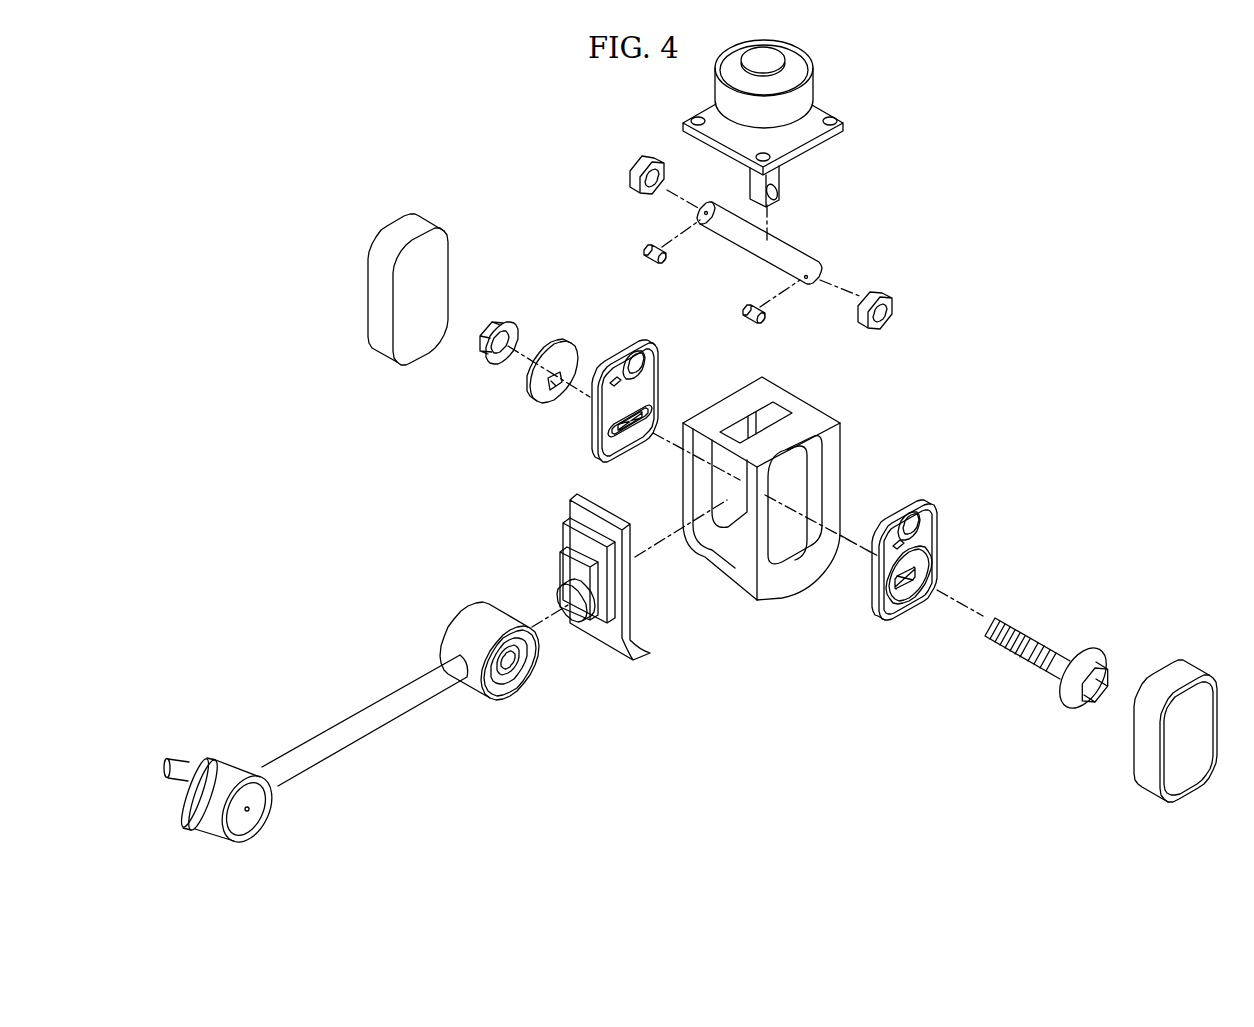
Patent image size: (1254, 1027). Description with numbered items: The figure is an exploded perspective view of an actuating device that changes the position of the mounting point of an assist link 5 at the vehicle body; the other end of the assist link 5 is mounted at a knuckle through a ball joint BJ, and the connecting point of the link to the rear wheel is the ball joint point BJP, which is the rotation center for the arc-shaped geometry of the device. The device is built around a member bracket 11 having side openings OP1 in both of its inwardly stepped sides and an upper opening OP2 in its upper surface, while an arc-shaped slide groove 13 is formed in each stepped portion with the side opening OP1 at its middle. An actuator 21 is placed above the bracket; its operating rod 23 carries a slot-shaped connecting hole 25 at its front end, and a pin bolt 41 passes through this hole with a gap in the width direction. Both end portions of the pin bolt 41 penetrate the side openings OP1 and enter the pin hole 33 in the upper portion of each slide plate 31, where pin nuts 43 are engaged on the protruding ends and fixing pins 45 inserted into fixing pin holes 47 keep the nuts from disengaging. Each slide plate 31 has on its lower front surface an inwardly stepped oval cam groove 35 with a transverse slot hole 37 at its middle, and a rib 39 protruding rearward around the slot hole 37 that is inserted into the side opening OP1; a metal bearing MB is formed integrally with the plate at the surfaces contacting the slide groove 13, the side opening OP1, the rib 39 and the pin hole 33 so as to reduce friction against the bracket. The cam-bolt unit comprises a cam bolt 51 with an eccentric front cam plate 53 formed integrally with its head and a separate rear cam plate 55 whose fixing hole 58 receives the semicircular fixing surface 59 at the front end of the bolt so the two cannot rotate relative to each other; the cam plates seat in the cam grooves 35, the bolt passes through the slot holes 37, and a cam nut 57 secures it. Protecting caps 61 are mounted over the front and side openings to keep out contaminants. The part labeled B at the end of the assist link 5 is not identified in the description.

The actuator 21 is at (815, 92).
The operating rod 23 is at (780, 172).
The connecting hole 25 is at (779, 190).
The pin bolt 41 is at (800, 262).
The pin nut 43 is at (865, 312).
The fixing pin 45 is at (740, 312).
The fixing pin hole 47 is at (704, 218).
The member bracket 11 is at (771, 496).
The side opening OP1 is at (783, 537).
The upper surface opening OP2 is at (756, 410).
The slide groove 13 is at (793, 562).
The slide plate 31 is at (583, 423).
The pin hole 33 is at (930, 520).
The cam groove 35 is at (906, 609).
The slot hole 37 is at (646, 430).
The rib 39 is at (632, 436).
The metal bearing MB is at (878, 616).
The rear cam plate 55 is at (558, 343).
The cam nut 57 is at (490, 320).
The fixing hole 58 is at (548, 388).
The cam bolt 51 is at (1052, 652).
The front cam plate 53 is at (1092, 650).
The fixing surface 59 is at (1015, 626).
The protecting cap 61 is at (1195, 662).
The assist link 5 is at (385, 735).
The bushing B is at (472, 604).
The ball joint BJ is at (235, 768).
The ball joint point BJP is at (261, 810).